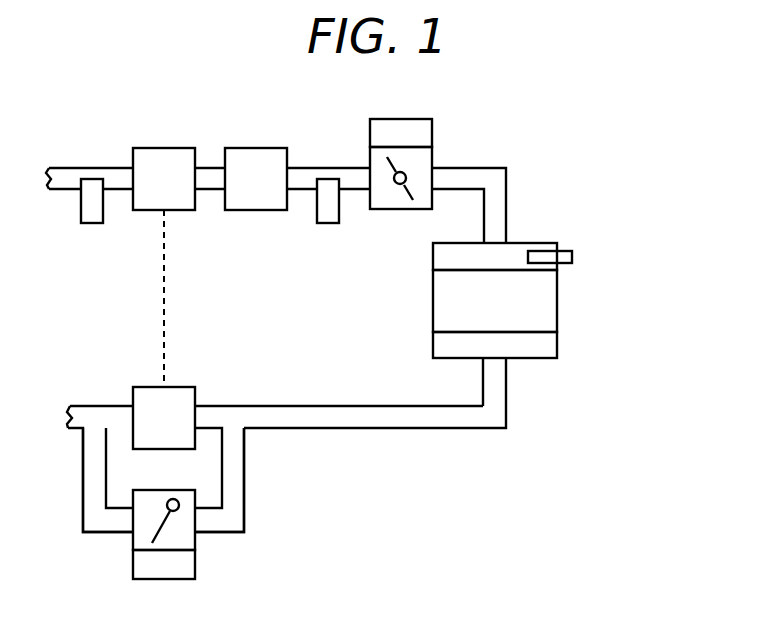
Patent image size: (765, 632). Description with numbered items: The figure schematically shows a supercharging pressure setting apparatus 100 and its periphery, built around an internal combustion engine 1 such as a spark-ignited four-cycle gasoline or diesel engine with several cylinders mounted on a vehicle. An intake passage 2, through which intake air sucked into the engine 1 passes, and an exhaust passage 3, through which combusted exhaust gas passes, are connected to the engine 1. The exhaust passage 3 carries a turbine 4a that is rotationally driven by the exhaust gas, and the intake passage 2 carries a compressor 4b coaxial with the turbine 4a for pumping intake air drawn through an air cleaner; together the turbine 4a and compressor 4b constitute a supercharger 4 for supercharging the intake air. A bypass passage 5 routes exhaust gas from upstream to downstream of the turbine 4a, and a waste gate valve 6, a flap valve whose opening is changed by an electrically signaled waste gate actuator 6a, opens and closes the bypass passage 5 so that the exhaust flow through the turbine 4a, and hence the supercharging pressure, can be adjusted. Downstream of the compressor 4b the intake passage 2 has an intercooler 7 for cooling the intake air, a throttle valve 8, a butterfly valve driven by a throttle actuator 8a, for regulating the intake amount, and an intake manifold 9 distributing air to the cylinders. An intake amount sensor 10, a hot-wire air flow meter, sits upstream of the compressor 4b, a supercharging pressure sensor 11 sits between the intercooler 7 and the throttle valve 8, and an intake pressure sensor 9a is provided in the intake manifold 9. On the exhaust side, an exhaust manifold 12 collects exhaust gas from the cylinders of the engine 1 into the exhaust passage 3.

The supercharging pressure setting apparatus 100 is at (585, 129).
The internal combustion engine 1 is at (557, 299).
The intake passage 2 is at (483, 167).
The exhaust passage 3 is at (506, 393).
The supercharger 4 is at (182, 275).
The turbine 4a is at (182, 387).
The compressor 4b is at (153, 148).
The bypass passage 5 is at (244, 498).
The waste gate valve 6 is at (195, 542).
The waste gate actuator 6a is at (195, 565).
The intercooler 7 is at (267, 148).
The throttle valve 8 is at (432, 157).
The throttle actuator 8a is at (418, 119).
The intake manifold 9 is at (547, 243).
The intake pressure sensor 9a is at (572, 257).
The intake amount sensor 10 is at (94, 223).
The supercharging pressure sensor 11 is at (329, 223).
The exhaust manifold 12 is at (557, 345).